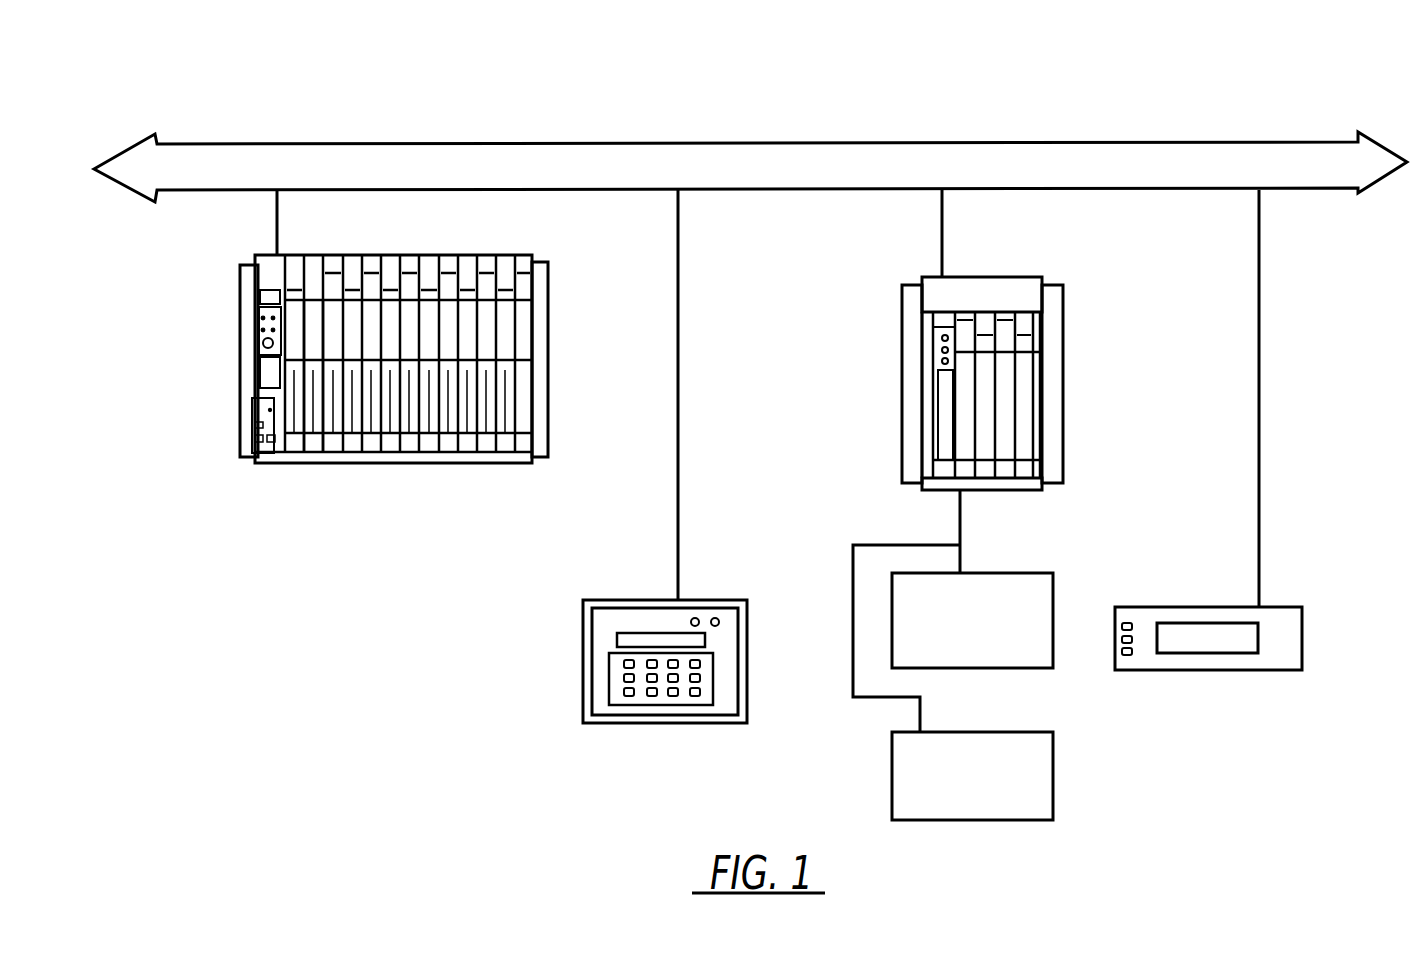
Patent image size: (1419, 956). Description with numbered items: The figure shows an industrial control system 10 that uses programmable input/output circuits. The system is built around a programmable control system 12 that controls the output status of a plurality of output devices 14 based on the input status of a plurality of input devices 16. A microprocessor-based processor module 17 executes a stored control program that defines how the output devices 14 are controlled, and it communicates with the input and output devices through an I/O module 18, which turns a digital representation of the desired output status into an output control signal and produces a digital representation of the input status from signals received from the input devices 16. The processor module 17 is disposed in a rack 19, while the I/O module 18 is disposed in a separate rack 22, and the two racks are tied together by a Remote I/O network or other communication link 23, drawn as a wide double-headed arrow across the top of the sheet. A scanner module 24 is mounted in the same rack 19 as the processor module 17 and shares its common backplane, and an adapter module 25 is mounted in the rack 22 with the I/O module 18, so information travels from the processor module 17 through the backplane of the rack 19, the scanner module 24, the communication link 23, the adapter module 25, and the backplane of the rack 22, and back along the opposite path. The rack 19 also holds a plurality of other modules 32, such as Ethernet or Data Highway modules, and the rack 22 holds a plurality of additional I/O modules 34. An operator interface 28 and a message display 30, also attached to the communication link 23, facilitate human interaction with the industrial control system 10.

The industrial control system 10 is at (330, 82).
The programmable control system 12 is at (377, 377).
The output devices 14 is at (1040, 573).
The input devices 16 is at (1040, 732).
The processor module 17 is at (270, 450).
The I/O module 18 is at (965, 470).
The rack 19 is at (542, 262).
The rack 22 is at (992, 382).
The communication link 23 is at (998, 140).
The scanner module 24 is at (330, 452).
The adapter module 25 is at (933, 360).
The operator interface 28 is at (583, 645).
The message display 30 is at (1302, 630).
The other modules 32 is at (410, 450).
The additional I/O modules 34 is at (1025, 327).